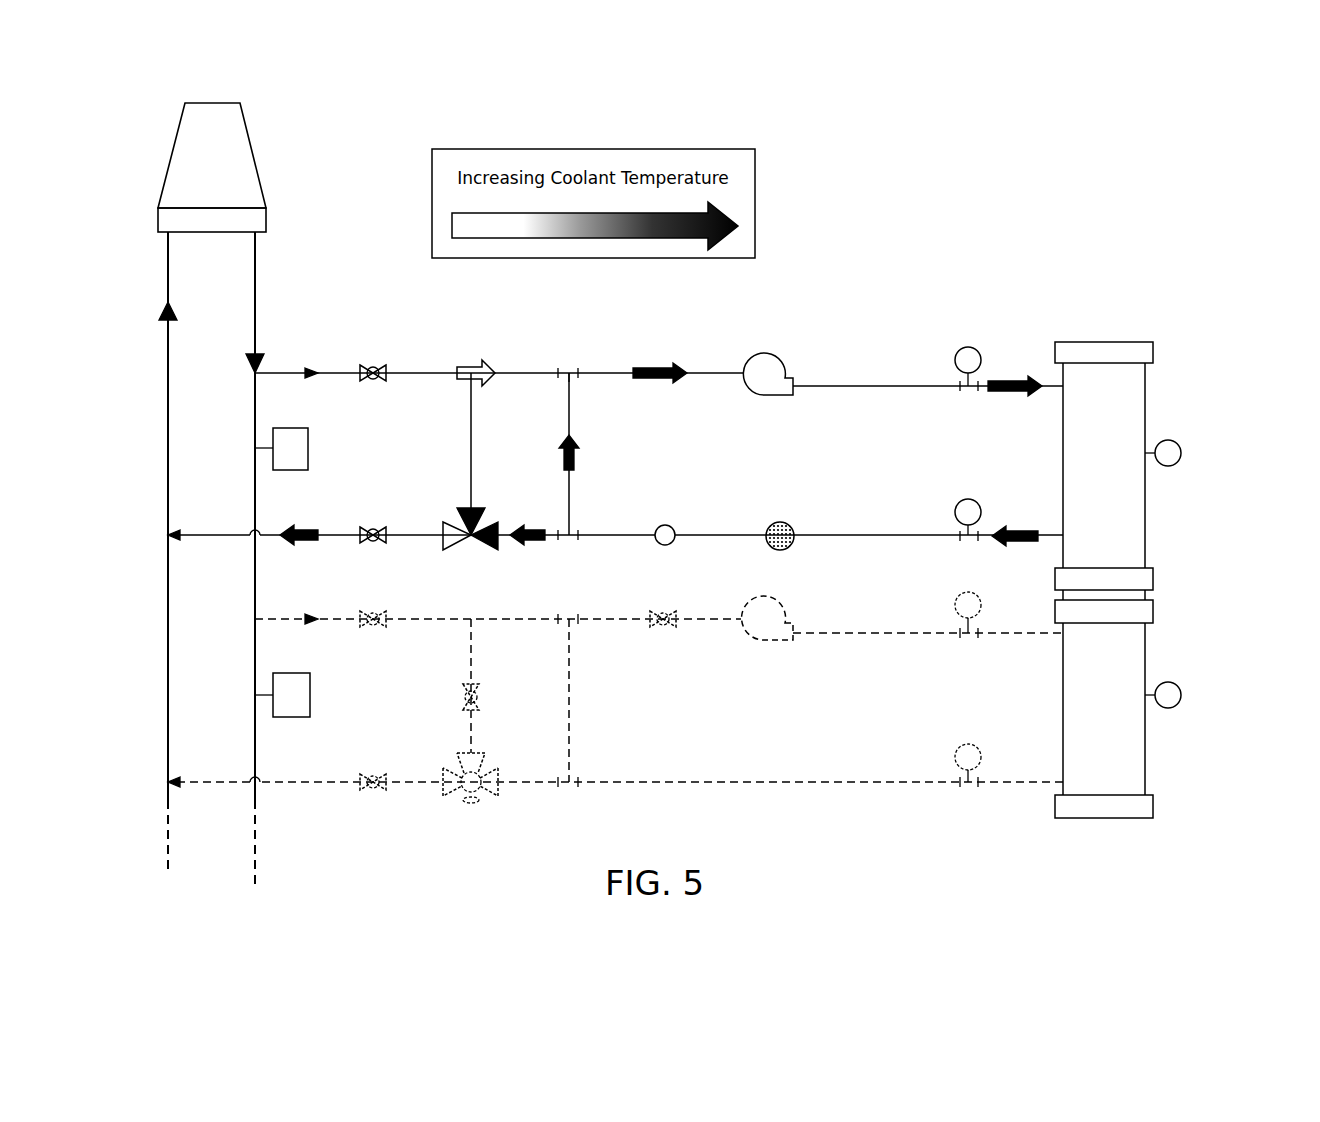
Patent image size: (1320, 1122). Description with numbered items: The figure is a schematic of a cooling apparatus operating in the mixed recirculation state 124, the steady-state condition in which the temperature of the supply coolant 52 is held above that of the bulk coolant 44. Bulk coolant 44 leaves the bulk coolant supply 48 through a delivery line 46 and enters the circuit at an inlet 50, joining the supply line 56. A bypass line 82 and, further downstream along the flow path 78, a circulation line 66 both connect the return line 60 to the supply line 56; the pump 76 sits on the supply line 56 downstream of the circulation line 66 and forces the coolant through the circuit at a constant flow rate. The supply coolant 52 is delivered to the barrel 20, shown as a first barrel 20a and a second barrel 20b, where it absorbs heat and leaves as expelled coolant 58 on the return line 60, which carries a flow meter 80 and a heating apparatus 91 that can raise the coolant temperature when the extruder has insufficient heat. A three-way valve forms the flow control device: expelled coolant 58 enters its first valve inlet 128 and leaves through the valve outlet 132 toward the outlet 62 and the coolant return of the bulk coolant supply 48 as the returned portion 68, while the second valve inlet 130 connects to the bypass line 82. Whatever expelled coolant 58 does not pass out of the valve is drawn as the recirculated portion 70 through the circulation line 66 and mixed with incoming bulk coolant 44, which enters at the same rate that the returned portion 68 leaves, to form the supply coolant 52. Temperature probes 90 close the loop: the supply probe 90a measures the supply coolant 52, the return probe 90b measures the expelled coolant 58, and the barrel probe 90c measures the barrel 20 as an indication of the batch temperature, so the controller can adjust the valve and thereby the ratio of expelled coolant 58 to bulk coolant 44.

The mixed recirculation state 124 is at (1035, 243).
The bulk coolant supply 48 is at (255, 482).
The delivery line 46 is at (320, 372).
The bulk coolant 44 is at (471, 370).
The inlet 50 is at (537, 373).
The bypass line 82 is at (470, 404).
The flow path 78 is at (652, 372).
The supply coolant 52 is at (1007, 393).
The pump 76 is at (764, 352).
The supply line 56 is at (870, 385).
The circulation line 66 is at (572, 409).
The recirculated portion 70 is at (577, 452).
The outlet 62 is at (343, 537).
The returned portion 68 is at (303, 530).
The second valve inlet 130 is at (470, 507).
The valve outlet 132 is at (453, 551).
The first valve inlet 128 is at (482, 552).
The heating apparatus 91 is at (665, 524).
The flow meter 80 is at (777, 550).
The return line 60 is at (880, 537).
The expelled coolant 58 is at (1020, 545).
The barrel 20 is at (1104, 580).
The first barrel 20a is at (1104, 466).
The second barrel 20b is at (1104, 709).
The temperature probes 90 is at (1080, 509).
The supply probe 90a is at (974, 350).
The return probe 90b is at (968, 499).
The barrel probe 90c is at (1178, 464).